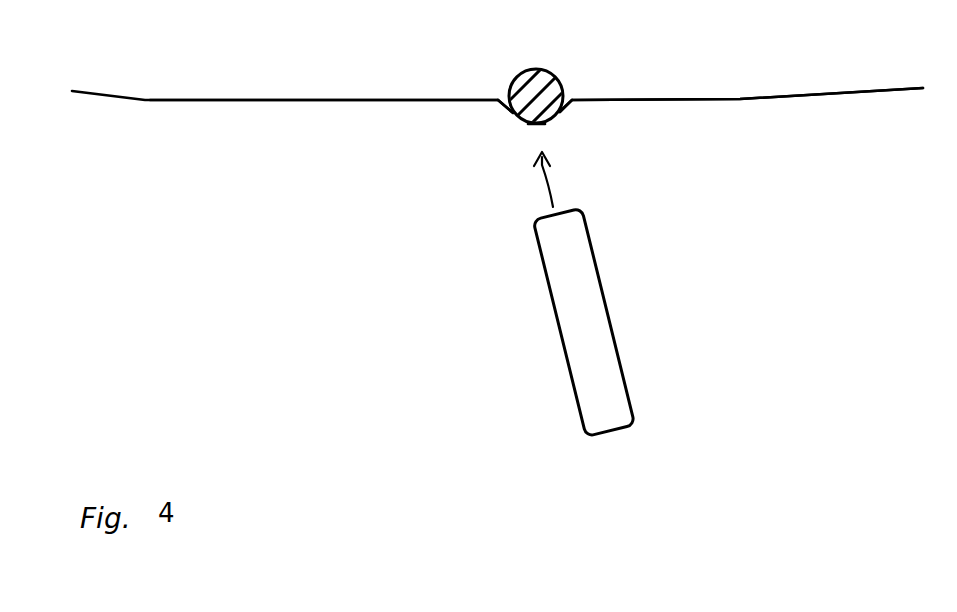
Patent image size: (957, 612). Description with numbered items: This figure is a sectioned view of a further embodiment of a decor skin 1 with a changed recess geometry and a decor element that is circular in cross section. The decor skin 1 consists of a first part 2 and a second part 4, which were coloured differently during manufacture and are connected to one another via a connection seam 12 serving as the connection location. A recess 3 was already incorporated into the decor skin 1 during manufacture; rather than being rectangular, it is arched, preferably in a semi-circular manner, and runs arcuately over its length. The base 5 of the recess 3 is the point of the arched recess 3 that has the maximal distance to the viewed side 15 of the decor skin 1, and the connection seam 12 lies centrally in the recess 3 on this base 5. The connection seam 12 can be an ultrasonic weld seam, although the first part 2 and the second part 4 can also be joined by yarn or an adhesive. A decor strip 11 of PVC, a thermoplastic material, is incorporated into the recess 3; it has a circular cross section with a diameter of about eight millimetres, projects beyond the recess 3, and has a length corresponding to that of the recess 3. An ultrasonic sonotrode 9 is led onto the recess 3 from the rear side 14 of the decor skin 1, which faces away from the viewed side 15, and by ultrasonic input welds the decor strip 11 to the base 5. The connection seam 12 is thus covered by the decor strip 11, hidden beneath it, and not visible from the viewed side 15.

The decor skin 1 is at (147, 99).
The first part 2 is at (352, 101).
The recess 3 is at (512, 115).
The second part 4 is at (777, 97).
The base 5 is at (542, 125).
The ultrasonic sonotrode 9 is at (613, 313).
The decor strip 11 is at (527, 71).
The connection seam 12 is at (530, 128).
The rear side 14 is at (211, 116).
The viewed side 15 is at (866, 73).